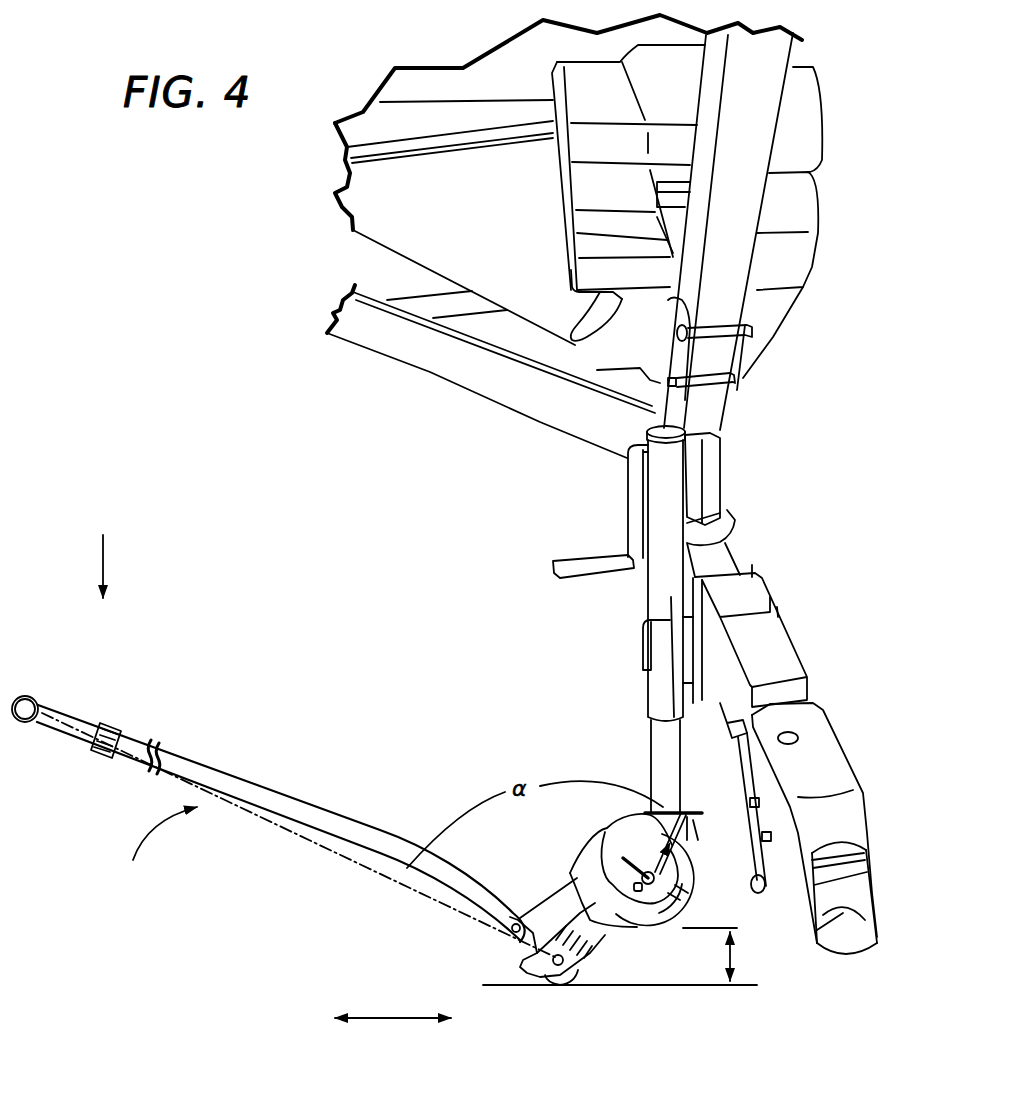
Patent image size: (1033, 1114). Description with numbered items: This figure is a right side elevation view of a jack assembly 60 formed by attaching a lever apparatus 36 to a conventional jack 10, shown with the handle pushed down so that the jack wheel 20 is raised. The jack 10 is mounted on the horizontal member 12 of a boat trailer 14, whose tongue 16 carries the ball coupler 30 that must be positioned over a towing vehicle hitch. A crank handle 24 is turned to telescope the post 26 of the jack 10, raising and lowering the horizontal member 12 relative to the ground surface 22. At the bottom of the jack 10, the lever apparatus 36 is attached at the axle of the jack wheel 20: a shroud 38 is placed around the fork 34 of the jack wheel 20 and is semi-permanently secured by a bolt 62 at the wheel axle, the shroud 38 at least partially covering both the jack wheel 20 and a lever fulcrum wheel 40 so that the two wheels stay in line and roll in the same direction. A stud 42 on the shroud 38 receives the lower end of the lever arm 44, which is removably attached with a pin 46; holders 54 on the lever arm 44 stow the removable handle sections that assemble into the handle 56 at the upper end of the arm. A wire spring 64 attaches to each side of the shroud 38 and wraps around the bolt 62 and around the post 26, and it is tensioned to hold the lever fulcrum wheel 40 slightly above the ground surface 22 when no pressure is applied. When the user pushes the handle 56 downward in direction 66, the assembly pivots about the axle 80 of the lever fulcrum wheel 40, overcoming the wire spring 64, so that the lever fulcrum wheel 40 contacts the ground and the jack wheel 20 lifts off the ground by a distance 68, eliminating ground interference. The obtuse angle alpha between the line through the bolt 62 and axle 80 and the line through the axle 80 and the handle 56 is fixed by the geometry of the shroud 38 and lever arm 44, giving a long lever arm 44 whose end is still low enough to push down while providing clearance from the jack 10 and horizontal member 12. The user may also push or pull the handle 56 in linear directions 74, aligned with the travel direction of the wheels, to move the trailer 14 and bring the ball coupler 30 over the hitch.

The jack 10 is at (645, 590).
The horizontal member 12 is at (783, 652).
The boat trailer 14 is at (483, 365).
The tongue 16 is at (863, 873).
The jack wheel 20 is at (687, 913).
The ground surface 22 is at (652, 987).
The crank handle 24 is at (593, 557).
The post 26 is at (663, 742).
The ball coupler 30 is at (847, 913).
The fork 34 is at (688, 840).
The lever apparatus 36 is at (262, 778).
The shroud 38 is at (580, 880).
The lever fulcrum wheel 40 is at (558, 985).
The stud 42 is at (538, 933).
The lever arm 44 is at (397, 877).
The pin 46 is at (513, 920).
The holders 54 is at (115, 722).
The handle 56 is at (28, 702).
The jack assembly 60 is at (157, 851).
The bolt 62 is at (649, 884).
The wire spring 64 is at (646, 866).
The direction 66 is at (103, 560).
The distance 68 is at (735, 957).
The linear directions 74 is at (390, 1017).
The axle 80 is at (563, 955).